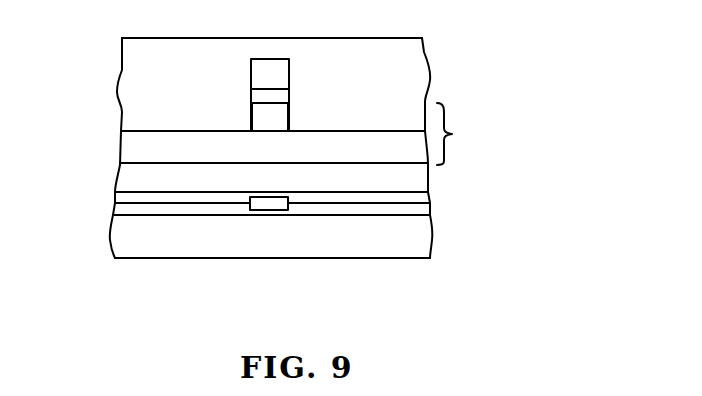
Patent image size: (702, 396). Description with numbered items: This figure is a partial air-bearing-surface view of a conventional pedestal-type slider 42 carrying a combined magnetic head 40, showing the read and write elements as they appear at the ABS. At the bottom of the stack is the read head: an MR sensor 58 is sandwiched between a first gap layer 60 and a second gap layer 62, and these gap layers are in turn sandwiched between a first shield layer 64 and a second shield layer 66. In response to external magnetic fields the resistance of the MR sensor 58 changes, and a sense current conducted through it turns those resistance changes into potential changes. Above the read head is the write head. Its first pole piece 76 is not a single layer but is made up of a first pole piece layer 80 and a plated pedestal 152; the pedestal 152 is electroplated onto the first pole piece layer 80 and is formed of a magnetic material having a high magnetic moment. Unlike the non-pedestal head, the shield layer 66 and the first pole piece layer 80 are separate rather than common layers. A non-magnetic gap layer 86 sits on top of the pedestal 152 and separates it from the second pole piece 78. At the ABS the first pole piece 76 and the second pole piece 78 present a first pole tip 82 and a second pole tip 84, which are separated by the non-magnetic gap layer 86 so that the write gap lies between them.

The magnetic head 40 is at (455, 42).
The slider 42 is at (122, 52).
The second pole piece 78 is at (251, 75).
The second pole tip 84 is at (277, 74).
The non-magnetic gap layer 86 is at (289, 98).
The first pole tip 82 is at (277, 117).
The pedestal 152 is at (251, 120).
The first pole piece 76 is at (465, 134).
The first pole piece layer 80 is at (122, 144).
The second shield layer 66 is at (122, 179).
The MR sensor 58 is at (272, 206).
The first gap layer 60 is at (148, 218).
The second gap layer 62 is at (386, 197).
The first shield layer 64 is at (400, 237).